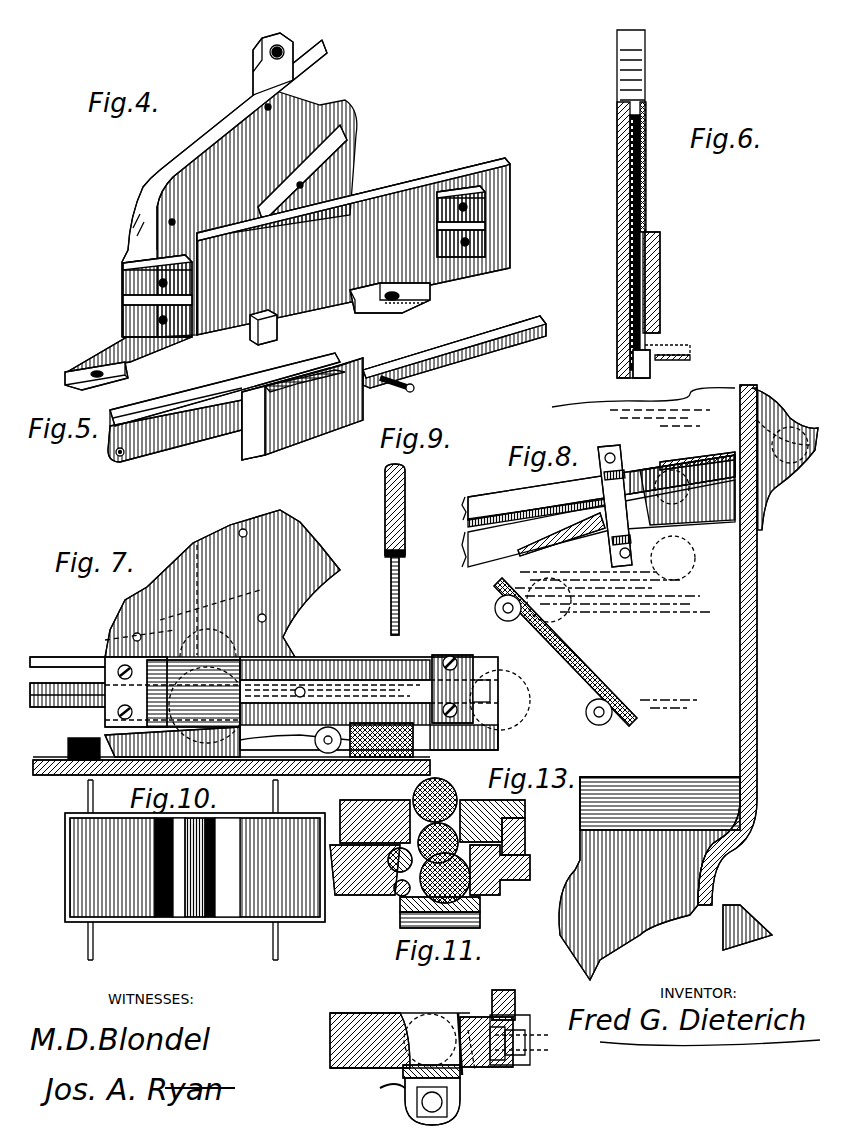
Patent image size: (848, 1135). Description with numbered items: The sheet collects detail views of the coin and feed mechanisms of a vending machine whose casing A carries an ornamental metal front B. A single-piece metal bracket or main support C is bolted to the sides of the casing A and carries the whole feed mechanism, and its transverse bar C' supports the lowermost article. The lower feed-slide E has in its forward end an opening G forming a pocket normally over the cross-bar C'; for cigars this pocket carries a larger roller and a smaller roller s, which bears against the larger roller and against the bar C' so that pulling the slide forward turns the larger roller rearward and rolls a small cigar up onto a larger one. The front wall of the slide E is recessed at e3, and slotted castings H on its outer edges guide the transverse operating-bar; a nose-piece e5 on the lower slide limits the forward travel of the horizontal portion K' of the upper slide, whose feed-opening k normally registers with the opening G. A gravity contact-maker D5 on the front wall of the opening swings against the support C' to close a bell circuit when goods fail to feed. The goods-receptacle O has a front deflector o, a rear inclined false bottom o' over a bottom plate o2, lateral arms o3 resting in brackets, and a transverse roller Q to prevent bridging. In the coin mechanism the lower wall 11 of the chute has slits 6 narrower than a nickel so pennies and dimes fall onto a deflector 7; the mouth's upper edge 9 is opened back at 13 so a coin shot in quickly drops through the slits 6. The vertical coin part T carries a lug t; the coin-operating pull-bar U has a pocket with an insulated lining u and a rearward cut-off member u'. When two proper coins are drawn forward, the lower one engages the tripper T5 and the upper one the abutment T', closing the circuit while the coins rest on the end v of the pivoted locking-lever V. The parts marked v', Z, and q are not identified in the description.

In FIG. 4, the vertical coin part T is at (353, 246).
In FIG. 6, the vertical coin part T is at (620, 204).
In FIG. 7, the vertical coin part T is at (222, 626).
In FIG. 4, the abutment T' is at (284, 175).
In FIG. 6, the abutment T' is at (657, 236).
In FIG. 7, the abutment T' is at (335, 675).
In FIG. 4, the lug t is at (269, 327).
In FIG. 6, the lug t is at (661, 367).
In FIG. 5, the insulated lining u is at (305, 363).
In FIG. 6, the insulated lining u is at (663, 282).
In FIG. 5, the rearwardly-extending member u' is at (224, 407).
In FIG. 7, the rearwardly-extending member u' is at (98, 670).
In FIG. 5, the locking-lever V is at (454, 354).
In FIG. 7, the locking-lever V is at (272, 760).
In FIG. 6, the end of the lever v is at (664, 282).
In FIG. 7, the end of the lever v is at (240, 758).
In FIG. 5, the slide block v' is at (302, 412).
In FIG. 7, the coin-operating pull-bar U is at (328, 690).
In FIG. 7, the block Z is at (235, 722).
In FIG. 9, the pin q is at (405, 466).
In FIG. 9, the slits 6 is at (405, 555).
In FIG. 8, the slits 6 is at (548, 552).
In FIG. 7, the slits 6 is at (202, 760).
In FIG. 8, the deflector 7 is at (598, 682).
In FIG. 8, the upper edge of the chute mouth 9 is at (731, 453).
In FIG. 8, the lower wall of the chute 11 is at (490, 568).
In FIG. 8, the open edge portion 13 is at (685, 462).
In FIG. 8, the casing A is at (662, 684).
In FIG. 8, the ornamental metal front B is at (758, 645).
In FIG. 11, the main support C is at (420, 1101).
In FIG. 7, the transverse bar C' is at (229, 778).
In FIG. 13, the transverse bar C' is at (464, 921).
In FIG. 11, the transverse bar C' is at (400, 1086).
In FIG. 10, the goods-receptacle O is at (181, 867).
In FIG. 10, the deflector o is at (280, 867).
In FIG. 10, the inclined false bottom o' is at (112, 867).
In FIG. 10, the bottom plate o2 is at (165, 920).
In FIG. 10, the lateral arms o3 is at (194, 872).
In FIG. 10, the transverse roller Q is at (212, 920).
In FIG. 13, the horizontal portion of the upper feed-slide K' is at (375, 810).
In FIG. 13, the feed-opening k is at (456, 800).
In FIG. 13, the tripper T5 is at (468, 766).
In FIG. 13, the lower feed-slide E is at (500, 868).
In FIG. 11, the lower feed-slide E is at (360, 1007).
In FIG. 13, the recess e3 is at (526, 837).
In FIG. 13, the opening G is at (480, 890).
In FIG. 11, the opening G is at (430, 1040).
In FIG. 13, the smaller roller s is at (398, 895).
In FIG. 11, the gravity contact-maker D5 is at (460, 1040).
In FIG. 11, the nose-piece e5 is at (515, 995).
In FIG. 11, the slotted castings H is at (521, 1045).